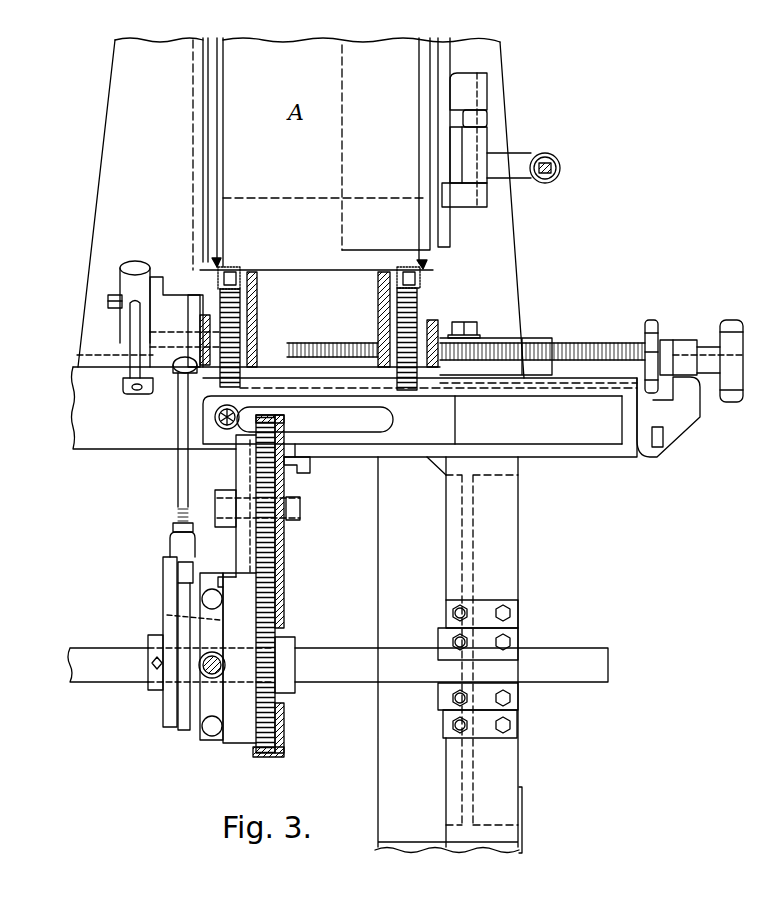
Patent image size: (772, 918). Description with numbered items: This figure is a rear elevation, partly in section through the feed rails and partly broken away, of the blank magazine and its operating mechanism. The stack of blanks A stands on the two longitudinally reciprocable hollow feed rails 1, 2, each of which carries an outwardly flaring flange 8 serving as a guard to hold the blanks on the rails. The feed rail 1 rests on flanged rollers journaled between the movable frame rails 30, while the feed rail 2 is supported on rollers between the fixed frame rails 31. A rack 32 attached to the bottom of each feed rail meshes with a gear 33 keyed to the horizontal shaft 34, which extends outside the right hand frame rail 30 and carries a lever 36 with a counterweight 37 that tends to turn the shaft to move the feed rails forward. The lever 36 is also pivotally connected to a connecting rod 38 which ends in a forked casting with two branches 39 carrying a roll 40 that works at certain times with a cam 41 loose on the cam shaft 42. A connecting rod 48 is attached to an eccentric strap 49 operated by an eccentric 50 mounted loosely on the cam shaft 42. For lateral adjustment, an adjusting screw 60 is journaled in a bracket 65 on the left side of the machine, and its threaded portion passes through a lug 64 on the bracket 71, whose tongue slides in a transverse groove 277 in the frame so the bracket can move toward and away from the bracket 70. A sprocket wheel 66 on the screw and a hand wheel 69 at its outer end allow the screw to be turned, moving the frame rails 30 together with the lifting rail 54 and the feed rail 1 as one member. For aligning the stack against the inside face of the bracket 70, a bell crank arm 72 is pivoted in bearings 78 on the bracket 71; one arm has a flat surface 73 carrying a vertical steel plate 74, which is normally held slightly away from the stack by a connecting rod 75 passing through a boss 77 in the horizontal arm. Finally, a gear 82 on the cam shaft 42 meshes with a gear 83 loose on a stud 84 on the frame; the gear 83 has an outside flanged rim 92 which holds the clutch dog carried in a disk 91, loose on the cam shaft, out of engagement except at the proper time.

The feed rail 1 is at (408, 266).
The feed rail 2 is at (232, 268).
The outwardly flaring flange 8 is at (214, 262).
The frame rail 30 is at (268, 321).
The frame rail 31 is at (203, 313).
The rack 32 is at (258, 292).
The gear 33 is at (225, 380).
The horizontal shaft 34 is at (319, 342).
The lever 36 is at (155, 348).
The counterweight 37 is at (120, 280).
The connecting rod 38 is at (178, 470).
The branch of forked casting 39 is at (170, 586).
The roll 40 is at (180, 569).
The cam 41 is at (182, 718).
The cam shaft 42 is at (107, 673).
The connecting rod 48 is at (205, 671).
The eccentric strap 49 is at (208, 702).
The eccentric 50 is at (167, 616).
The lifting rail 54 is at (260, 275).
The adjusting screw 60 is at (588, 352).
The lug 64 is at (469, 357).
The bracket 65 is at (687, 343).
The sprocket wheel 66 is at (657, 322).
The hand wheel 69 is at (735, 324).
The bracket 70 is at (117, 148).
The bracket 71 is at (522, 226).
The bell crank arm 72 is at (487, 118).
The flat surface 73 is at (470, 150).
The steel plate 74 is at (436, 144).
The connecting rod 75 is at (559, 162).
The boss 77 is at (556, 176).
The bearing 78 is at (487, 86).
The gear 82 is at (282, 721).
The gear 83 is at (281, 543).
The stud 84 is at (223, 518).
The disk 91 is at (237, 742).
The flanged rim 92 is at (244, 462).
The transverse groove 277 is at (574, 397).